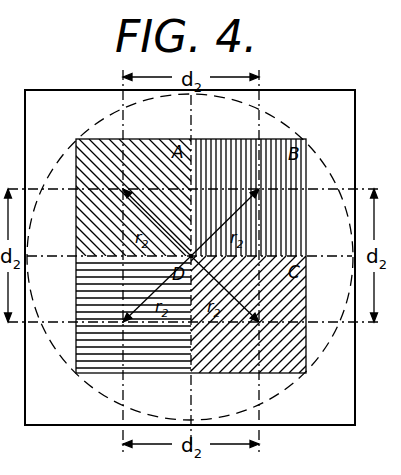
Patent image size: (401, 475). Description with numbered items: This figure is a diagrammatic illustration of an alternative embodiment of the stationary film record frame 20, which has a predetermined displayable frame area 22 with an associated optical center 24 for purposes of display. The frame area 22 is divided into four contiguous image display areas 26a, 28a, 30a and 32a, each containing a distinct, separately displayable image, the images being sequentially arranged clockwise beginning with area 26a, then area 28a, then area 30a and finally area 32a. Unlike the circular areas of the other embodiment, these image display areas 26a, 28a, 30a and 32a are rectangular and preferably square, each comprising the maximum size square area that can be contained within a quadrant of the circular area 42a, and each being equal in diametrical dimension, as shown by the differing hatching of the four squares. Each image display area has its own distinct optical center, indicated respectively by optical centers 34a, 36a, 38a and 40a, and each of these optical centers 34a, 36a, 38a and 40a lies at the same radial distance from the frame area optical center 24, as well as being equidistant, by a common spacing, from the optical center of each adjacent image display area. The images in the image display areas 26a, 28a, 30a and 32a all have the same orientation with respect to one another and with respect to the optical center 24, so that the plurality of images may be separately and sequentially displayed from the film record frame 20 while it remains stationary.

The film record frame 20 is at (290, 427).
The frame area 22 is at (333, 119).
The optical center 24 is at (191, 256).
The image display area 26a is at (155, 138).
The image display area 28a is at (222, 138).
The image display area 30a is at (280, 374).
The image display area 32a is at (128, 374).
The optical center 34a is at (123, 189).
The optical center 36a is at (259, 189).
The optical center 38a is at (266, 308).
The optical center 40a is at (123, 322).
The circular area 42a is at (57, 140).